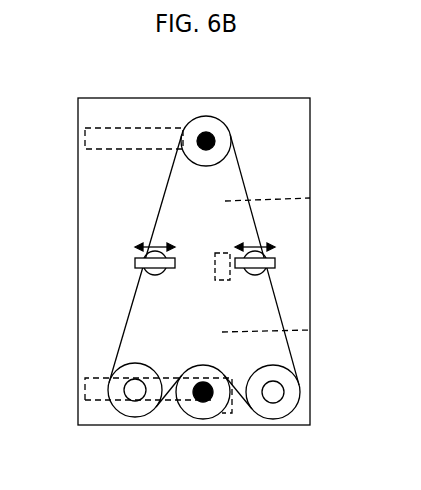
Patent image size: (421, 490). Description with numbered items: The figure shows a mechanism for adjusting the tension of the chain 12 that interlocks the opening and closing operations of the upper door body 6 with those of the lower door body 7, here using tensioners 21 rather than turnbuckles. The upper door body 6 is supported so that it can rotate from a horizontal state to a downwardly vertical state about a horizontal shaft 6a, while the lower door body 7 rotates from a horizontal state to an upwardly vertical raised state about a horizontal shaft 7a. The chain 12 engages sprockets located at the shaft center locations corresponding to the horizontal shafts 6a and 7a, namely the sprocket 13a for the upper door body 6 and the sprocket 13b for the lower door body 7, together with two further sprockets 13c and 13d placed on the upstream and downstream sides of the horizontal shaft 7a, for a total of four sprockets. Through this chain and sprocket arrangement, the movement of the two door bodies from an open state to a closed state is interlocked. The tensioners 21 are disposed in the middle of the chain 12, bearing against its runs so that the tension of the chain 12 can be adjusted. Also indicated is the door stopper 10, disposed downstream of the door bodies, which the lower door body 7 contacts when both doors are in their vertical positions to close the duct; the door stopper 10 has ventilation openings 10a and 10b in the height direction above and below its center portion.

The upper door body 6 is at (113, 128).
The horizontal shaft 6a is at (209, 136).
The sprocket 13a is at (199, 158).
The chain 12 is at (248, 179).
The ventilation opening 10a is at (310, 198).
The tensioner 21 is at (276, 264).
The door stopper 10 is at (215, 279).
The ventilation opening 10b is at (310, 330).
The lower door body 7 is at (85, 388).
The sprocket 13c is at (132, 403).
The sprocket 13b is at (210, 414).
The horizontal shaft 7a is at (201, 398).
The sprocket 13d is at (291, 392).